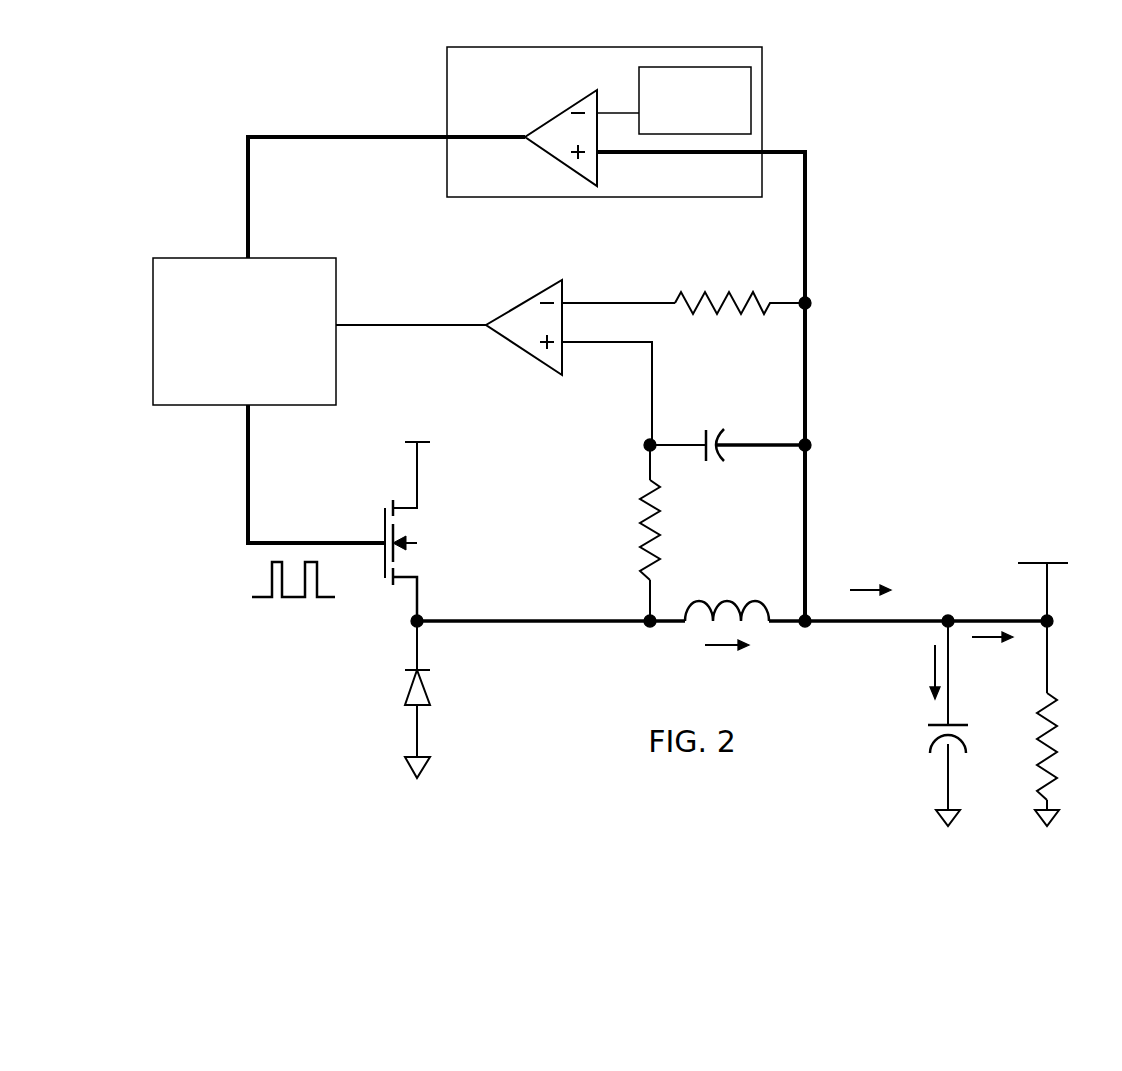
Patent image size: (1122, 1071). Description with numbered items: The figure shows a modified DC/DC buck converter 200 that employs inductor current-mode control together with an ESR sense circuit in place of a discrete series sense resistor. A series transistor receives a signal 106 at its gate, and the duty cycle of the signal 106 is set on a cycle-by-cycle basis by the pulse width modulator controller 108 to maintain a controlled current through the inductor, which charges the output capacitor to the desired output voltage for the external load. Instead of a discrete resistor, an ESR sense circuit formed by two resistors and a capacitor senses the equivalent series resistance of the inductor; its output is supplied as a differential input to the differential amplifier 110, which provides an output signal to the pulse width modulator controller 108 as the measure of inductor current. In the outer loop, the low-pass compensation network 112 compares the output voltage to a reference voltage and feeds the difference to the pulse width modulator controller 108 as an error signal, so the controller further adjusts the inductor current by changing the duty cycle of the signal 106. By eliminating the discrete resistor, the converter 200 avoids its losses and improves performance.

The modified DC/DC buck converter 200 is at (947, 150).
The signal 106 is at (252, 597).
The pulse width modulator controller 108 is at (174, 408).
The differential amplifier 110 is at (526, 350).
The low-pass compensation network 112 is at (447, 85).